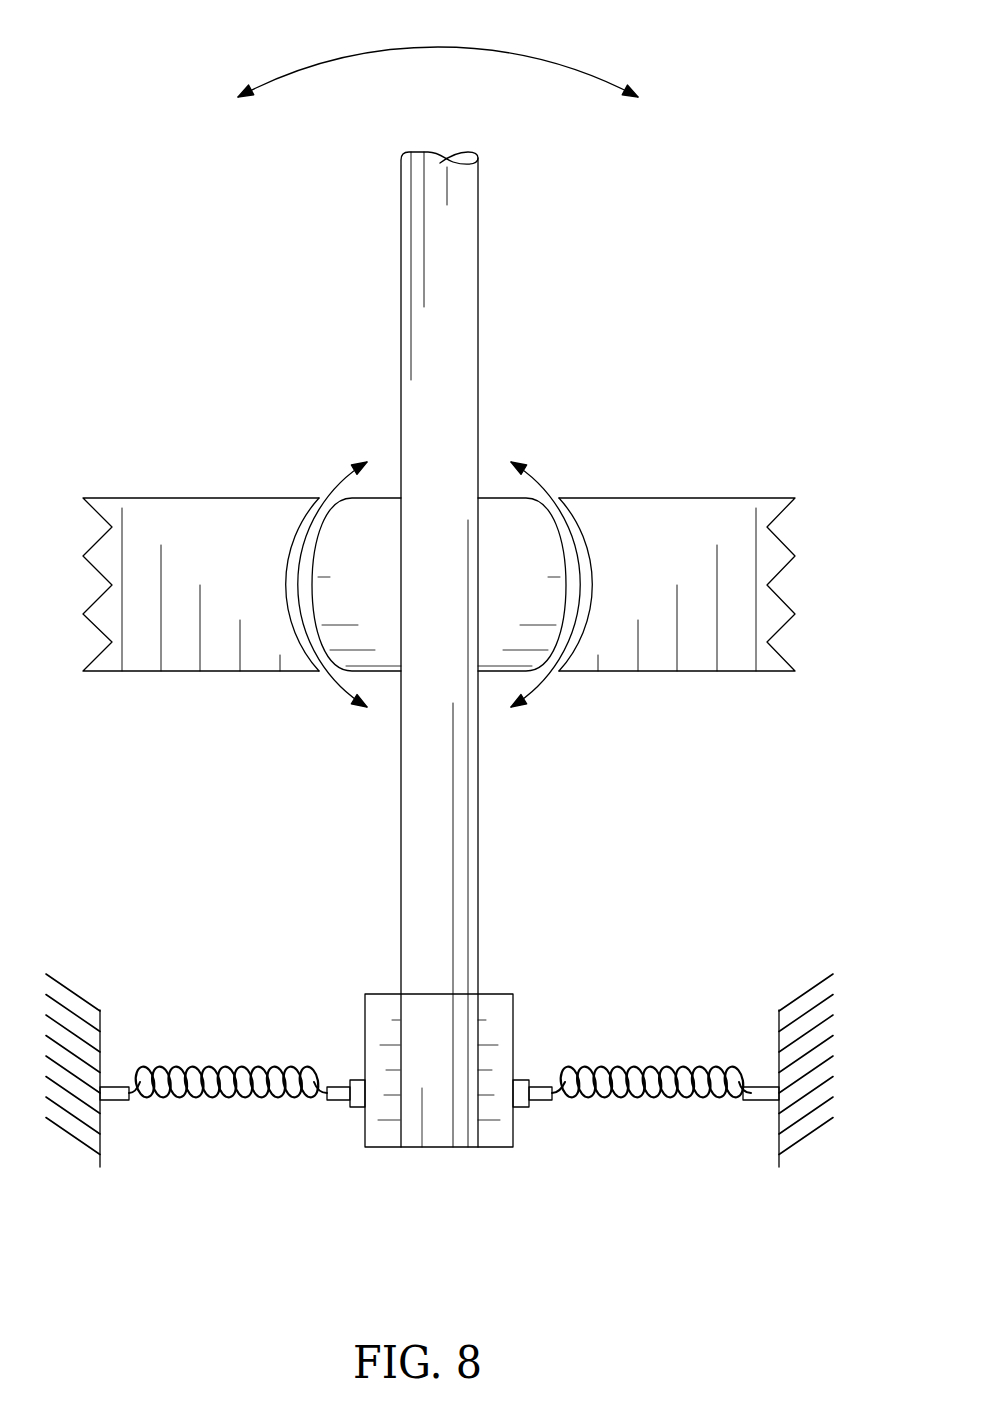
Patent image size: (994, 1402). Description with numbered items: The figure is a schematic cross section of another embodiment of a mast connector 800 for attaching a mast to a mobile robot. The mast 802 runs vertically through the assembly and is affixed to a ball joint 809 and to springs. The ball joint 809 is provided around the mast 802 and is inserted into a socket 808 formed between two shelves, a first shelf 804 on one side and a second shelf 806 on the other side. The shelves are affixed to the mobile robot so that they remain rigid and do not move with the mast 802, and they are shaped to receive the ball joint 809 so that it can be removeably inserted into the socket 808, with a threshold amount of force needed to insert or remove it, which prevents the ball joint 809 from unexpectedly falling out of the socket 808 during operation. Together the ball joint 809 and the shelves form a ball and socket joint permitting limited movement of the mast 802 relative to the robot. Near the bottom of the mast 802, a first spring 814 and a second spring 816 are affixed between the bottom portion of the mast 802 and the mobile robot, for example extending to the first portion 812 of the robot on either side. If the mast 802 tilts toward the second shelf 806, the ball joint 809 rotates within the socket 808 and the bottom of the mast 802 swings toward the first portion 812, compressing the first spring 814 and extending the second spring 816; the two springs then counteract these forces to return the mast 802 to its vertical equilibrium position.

The mast connector 800 is at (138, 47).
The mast 802 is at (465, 300).
The first shelf 804 is at (688, 510).
The second shelf 806 is at (152, 513).
The socket 808 is at (310, 483).
The ball joint 809 is at (353, 530).
The first portion of the mobile robot 812 is at (63, 985).
The first spring 814 is at (240, 1100).
The second spring 816 is at (685, 1100).